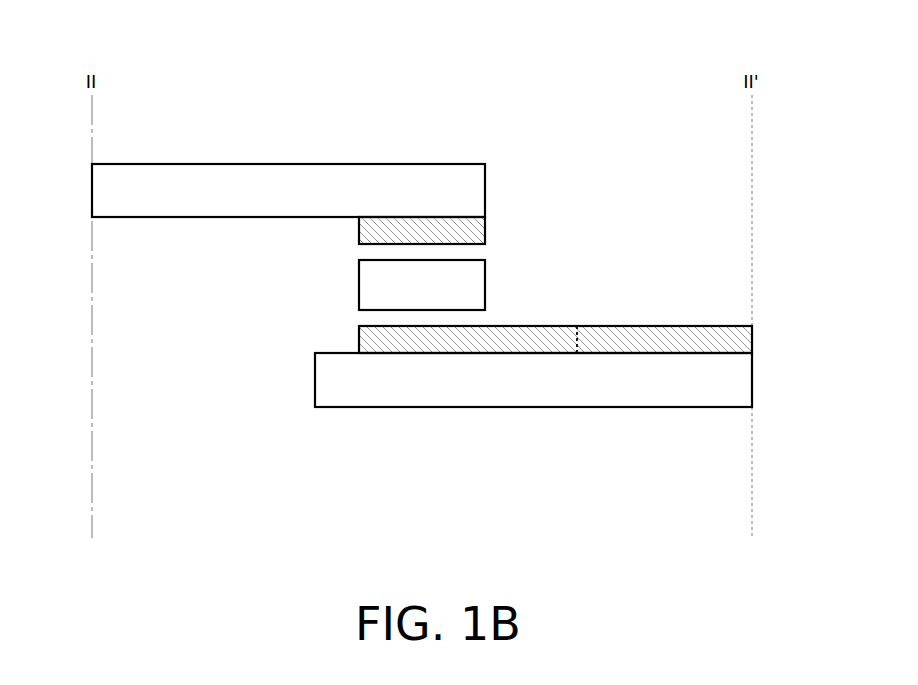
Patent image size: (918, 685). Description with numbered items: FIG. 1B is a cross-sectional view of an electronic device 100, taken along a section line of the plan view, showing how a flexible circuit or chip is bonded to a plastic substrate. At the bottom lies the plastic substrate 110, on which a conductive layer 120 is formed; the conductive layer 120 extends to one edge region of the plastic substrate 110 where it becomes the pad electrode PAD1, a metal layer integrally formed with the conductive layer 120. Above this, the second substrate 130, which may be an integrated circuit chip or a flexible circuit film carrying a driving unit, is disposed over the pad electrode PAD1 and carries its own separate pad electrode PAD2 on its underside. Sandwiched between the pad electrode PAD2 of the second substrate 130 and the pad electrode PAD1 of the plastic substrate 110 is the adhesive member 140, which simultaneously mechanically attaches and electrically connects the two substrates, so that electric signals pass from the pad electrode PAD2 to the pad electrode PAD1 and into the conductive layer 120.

The electronic device 100 is at (726, 37).
The plastic substrate 110 is at (733, 376).
The conductive layer 120 is at (733, 341).
The second substrate 130 is at (108, 192).
The adhesive member 140 is at (466, 284).
The pad electrode PAD1 is at (374, 340).
The pad electrode PAD2 is at (466, 232).